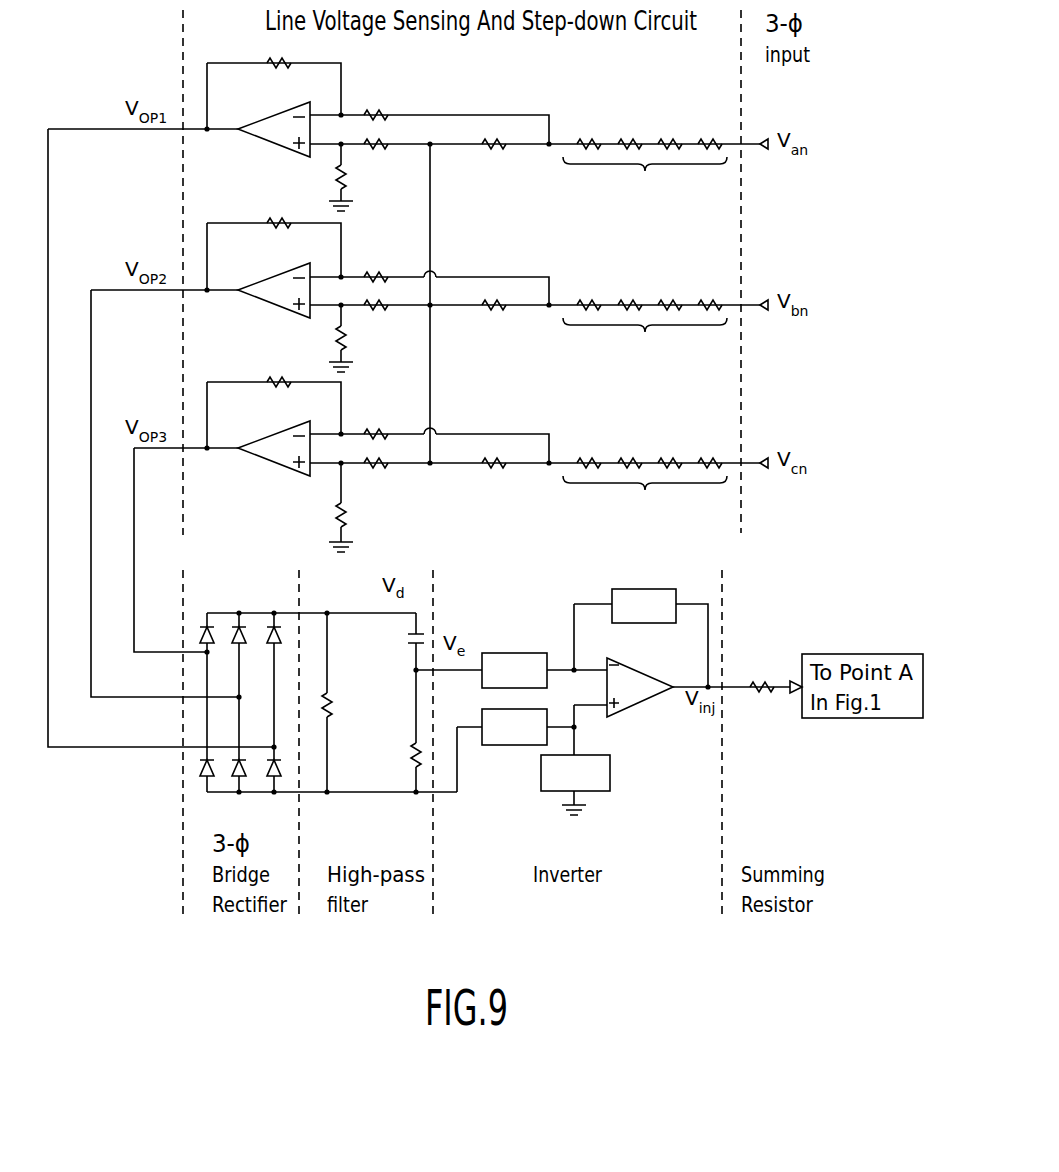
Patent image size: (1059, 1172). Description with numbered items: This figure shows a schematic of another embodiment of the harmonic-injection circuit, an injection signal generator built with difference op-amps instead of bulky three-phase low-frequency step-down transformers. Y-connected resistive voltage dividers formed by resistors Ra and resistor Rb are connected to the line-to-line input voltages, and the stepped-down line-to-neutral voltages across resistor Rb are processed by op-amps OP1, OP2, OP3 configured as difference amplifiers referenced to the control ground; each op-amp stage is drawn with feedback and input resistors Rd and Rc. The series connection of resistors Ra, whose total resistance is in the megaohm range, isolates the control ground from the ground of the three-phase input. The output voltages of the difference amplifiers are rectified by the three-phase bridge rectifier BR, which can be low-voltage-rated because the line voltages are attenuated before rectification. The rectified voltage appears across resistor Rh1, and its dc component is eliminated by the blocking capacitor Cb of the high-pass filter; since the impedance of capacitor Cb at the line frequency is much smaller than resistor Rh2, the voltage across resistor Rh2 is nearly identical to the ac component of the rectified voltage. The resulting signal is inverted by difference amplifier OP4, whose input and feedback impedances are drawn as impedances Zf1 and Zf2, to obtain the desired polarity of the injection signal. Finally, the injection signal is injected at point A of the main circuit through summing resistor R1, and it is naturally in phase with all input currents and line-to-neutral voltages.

The op-amp OP1 is at (274, 129).
The op-amp OP2 is at (274, 290).
The op-amp OP3 is at (274, 448).
The difference amplifier OP4 is at (640, 687).
The resistor Rd is at (306, 294).
The resistor Rc is at (378, 294).
The resistor Rb is at (495, 320).
The resistors Ra is at (649, 316).
The three-phase bridge rectifier BR is at (328, 691).
The high-pass filter resistor Rh1 is at (346, 702).
The resistor Rh2 is at (397, 731).
The blocking capacitor Cb is at (400, 641).
The inverter input impedance Zf1 is at (514, 699).
The inverter feedback impedance Zf2 is at (608, 690).
The summing resistor R1 is at (737, 672).